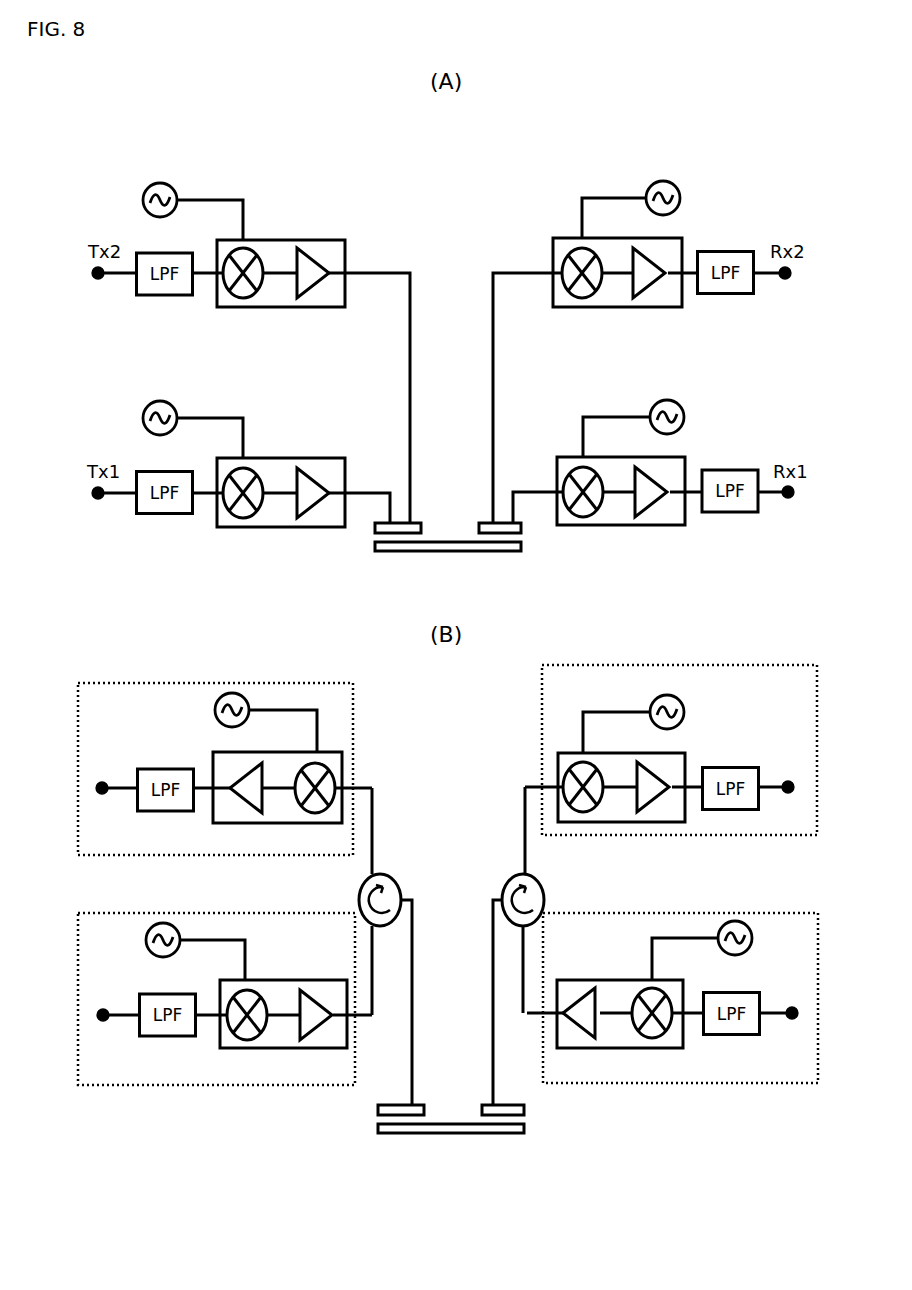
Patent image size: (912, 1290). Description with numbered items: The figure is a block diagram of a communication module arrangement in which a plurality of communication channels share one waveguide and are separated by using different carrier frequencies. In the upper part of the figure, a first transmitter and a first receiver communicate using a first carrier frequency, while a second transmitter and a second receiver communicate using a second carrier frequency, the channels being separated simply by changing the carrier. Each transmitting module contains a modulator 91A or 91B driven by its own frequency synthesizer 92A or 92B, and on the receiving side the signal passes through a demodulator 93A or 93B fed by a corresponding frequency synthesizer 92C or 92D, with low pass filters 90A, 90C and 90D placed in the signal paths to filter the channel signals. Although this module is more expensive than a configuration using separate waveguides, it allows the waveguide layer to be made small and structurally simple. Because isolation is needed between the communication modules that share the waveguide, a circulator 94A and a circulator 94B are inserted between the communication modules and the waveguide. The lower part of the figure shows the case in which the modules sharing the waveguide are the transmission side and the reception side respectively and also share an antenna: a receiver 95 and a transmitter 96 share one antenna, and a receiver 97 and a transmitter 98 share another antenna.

The low pass filter 90A is at (153, 296).
The low pass filter 90C is at (720, 295).
The low pass filter 90D is at (722, 513).
The modulator 91A is at (273, 240).
The modulator 91B is at (272, 458).
The frequency synthesizer 92A is at (167, 183).
The frequency synthesizer 92B is at (170, 402).
The frequency synthesizer 92C is at (668, 182).
The frequency synthesizer 92D is at (667, 402).
The demodulator 93A is at (673, 238).
The demodulator 93B is at (677, 457).
The circulator 94A is at (390, 875).
The circulator 94B is at (545, 888).
The receiver 95 is at (282, 855).
The transmitter 96 is at (282, 1085).
The receiver 97 is at (747, 835).
The transmitter 98 is at (747, 1083).